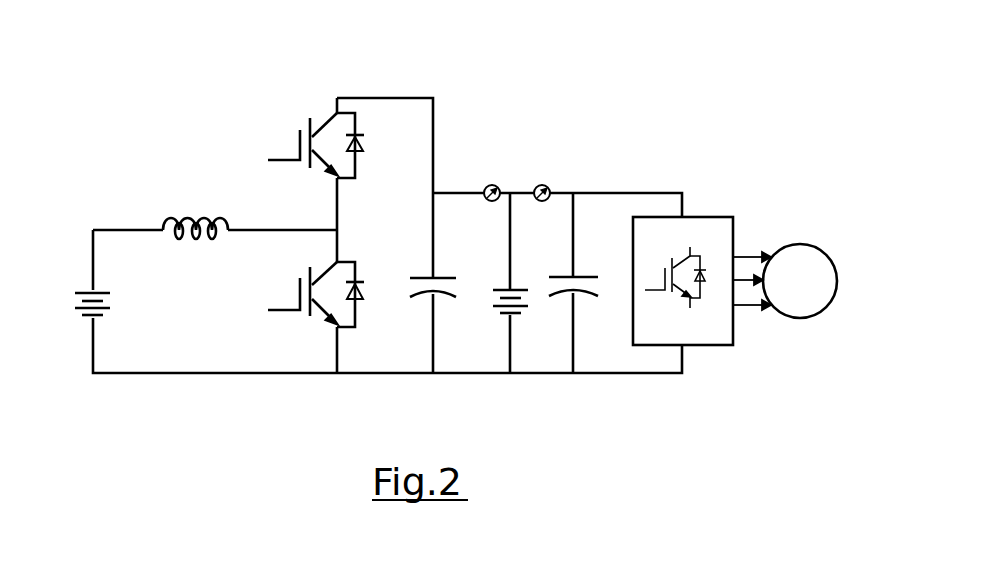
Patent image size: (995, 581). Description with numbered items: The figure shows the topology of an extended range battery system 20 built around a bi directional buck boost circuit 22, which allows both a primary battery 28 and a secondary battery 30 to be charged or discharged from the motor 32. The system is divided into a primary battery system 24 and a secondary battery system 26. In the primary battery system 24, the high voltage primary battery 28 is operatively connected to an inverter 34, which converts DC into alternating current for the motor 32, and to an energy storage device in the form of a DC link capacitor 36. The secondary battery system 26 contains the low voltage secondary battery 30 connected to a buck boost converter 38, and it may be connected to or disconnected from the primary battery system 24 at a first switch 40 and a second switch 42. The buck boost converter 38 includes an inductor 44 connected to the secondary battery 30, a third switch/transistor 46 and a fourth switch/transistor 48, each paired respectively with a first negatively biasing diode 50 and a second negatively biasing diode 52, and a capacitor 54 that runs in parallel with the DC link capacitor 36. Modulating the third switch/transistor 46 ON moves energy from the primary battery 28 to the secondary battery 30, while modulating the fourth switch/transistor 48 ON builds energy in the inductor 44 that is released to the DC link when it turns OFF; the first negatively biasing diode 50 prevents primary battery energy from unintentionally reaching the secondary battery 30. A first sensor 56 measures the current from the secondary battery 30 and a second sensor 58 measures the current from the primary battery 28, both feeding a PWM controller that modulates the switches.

The extended range battery system 20 is at (588, 61).
The bi directional buck boost circuit 22 is at (369, 231).
The primary battery system 24 is at (683, 160).
The secondary battery system 26 is at (232, 138).
The primary battery 28 is at (520, 288).
The secondary battery 30 is at (92, 290).
The motor 32 is at (802, 255).
The inverter 34 is at (713, 345).
The DC link capacitor 36 is at (578, 275).
The buck boost converter 38 is at (183, 170).
The first switch 40 is at (470, 186).
The second switch 42 is at (473, 367).
The inductor 44 is at (163, 218).
The third switch/transistor 46 is at (302, 128).
The fourth switch/transistor 48 is at (300, 310).
The first negatively biasing diode 50 is at (360, 152).
The second negatively biasing diode 52 is at (354, 330).
The capacitor 54 is at (425, 296).
The first sensor 56 is at (492, 185).
The second sensor 58 is at (540, 185).